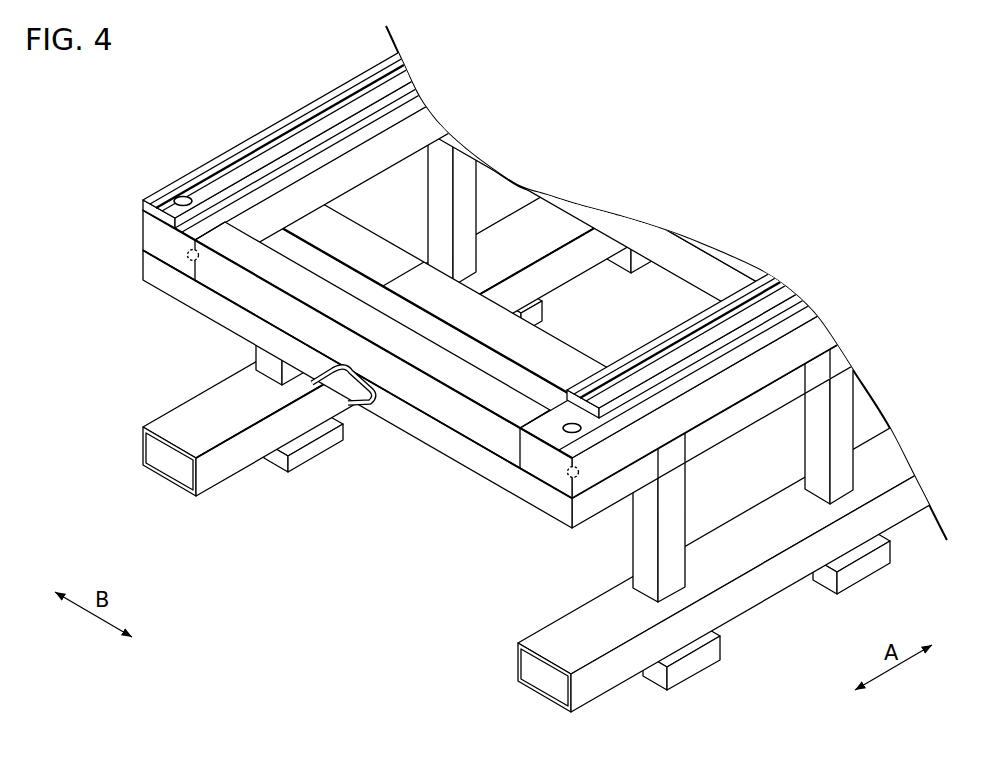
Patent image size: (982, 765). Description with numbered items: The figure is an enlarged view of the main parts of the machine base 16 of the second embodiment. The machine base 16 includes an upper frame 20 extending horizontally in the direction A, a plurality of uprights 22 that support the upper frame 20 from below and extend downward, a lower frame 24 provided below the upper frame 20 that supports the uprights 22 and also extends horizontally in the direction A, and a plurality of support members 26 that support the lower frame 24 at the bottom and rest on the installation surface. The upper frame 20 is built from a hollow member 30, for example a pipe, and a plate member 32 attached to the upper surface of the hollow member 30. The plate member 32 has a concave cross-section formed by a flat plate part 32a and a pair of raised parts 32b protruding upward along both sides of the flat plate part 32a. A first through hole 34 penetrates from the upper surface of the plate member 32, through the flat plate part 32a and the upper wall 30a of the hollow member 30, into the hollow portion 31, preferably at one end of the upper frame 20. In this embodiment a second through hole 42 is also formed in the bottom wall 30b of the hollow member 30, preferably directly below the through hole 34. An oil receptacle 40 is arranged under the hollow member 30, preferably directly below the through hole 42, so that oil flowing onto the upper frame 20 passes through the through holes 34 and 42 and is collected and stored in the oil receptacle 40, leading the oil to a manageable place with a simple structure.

The machine base 16 is at (63, 133).
The upper frame 20 is at (268, 82).
The uprights 22 is at (443, 247).
The lower frame 24 is at (178, 410).
The support members 26 is at (318, 447).
The hollow member 30 is at (305, 172).
The upper wall 30a is at (413, 107).
The bottom wall 30b is at (150, 249).
The hollow portion 31 is at (152, 226).
The plate member 32 is at (227, 170).
The flat plate part 32a is at (368, 96).
The raised parts 32b is at (426, 99).
The through hole 34 is at (183, 195).
The oil receptacle 40 is at (210, 305).
The through hole 42 is at (186, 261).